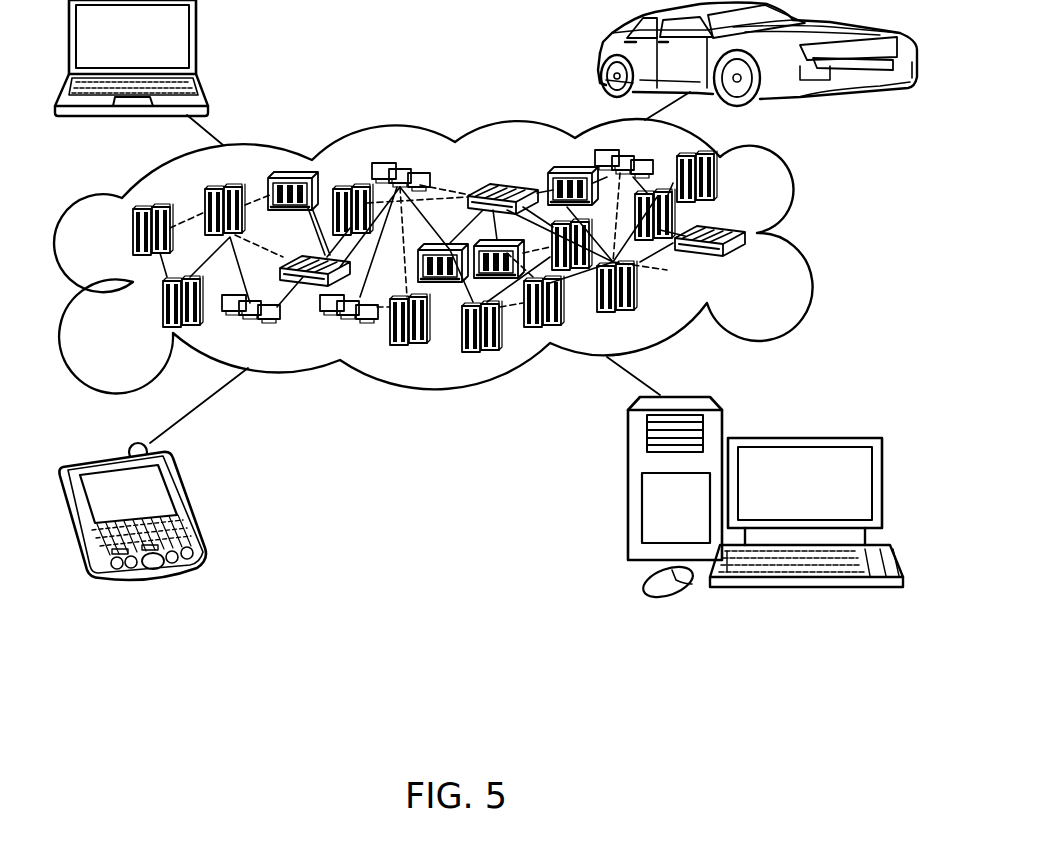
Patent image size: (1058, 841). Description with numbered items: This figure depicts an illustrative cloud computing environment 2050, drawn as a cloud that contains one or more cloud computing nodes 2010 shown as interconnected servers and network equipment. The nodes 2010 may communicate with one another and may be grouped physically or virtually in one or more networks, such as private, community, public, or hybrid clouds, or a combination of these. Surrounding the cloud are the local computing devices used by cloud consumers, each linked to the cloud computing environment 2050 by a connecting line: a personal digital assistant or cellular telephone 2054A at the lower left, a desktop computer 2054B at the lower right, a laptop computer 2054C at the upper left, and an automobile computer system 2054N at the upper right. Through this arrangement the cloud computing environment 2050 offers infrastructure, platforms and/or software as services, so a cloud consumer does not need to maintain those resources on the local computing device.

The laptop computer 2054C is at (196, 43).
The automobile computer system 2054N is at (600, 50).
The cloud computing environment 2050 is at (800, 234).
The cloud computing nodes 2010 is at (749, 257).
The personal digital assistant or cellular telephone 2054A is at (187, 506).
The desktop computer 2054B is at (810, 424).